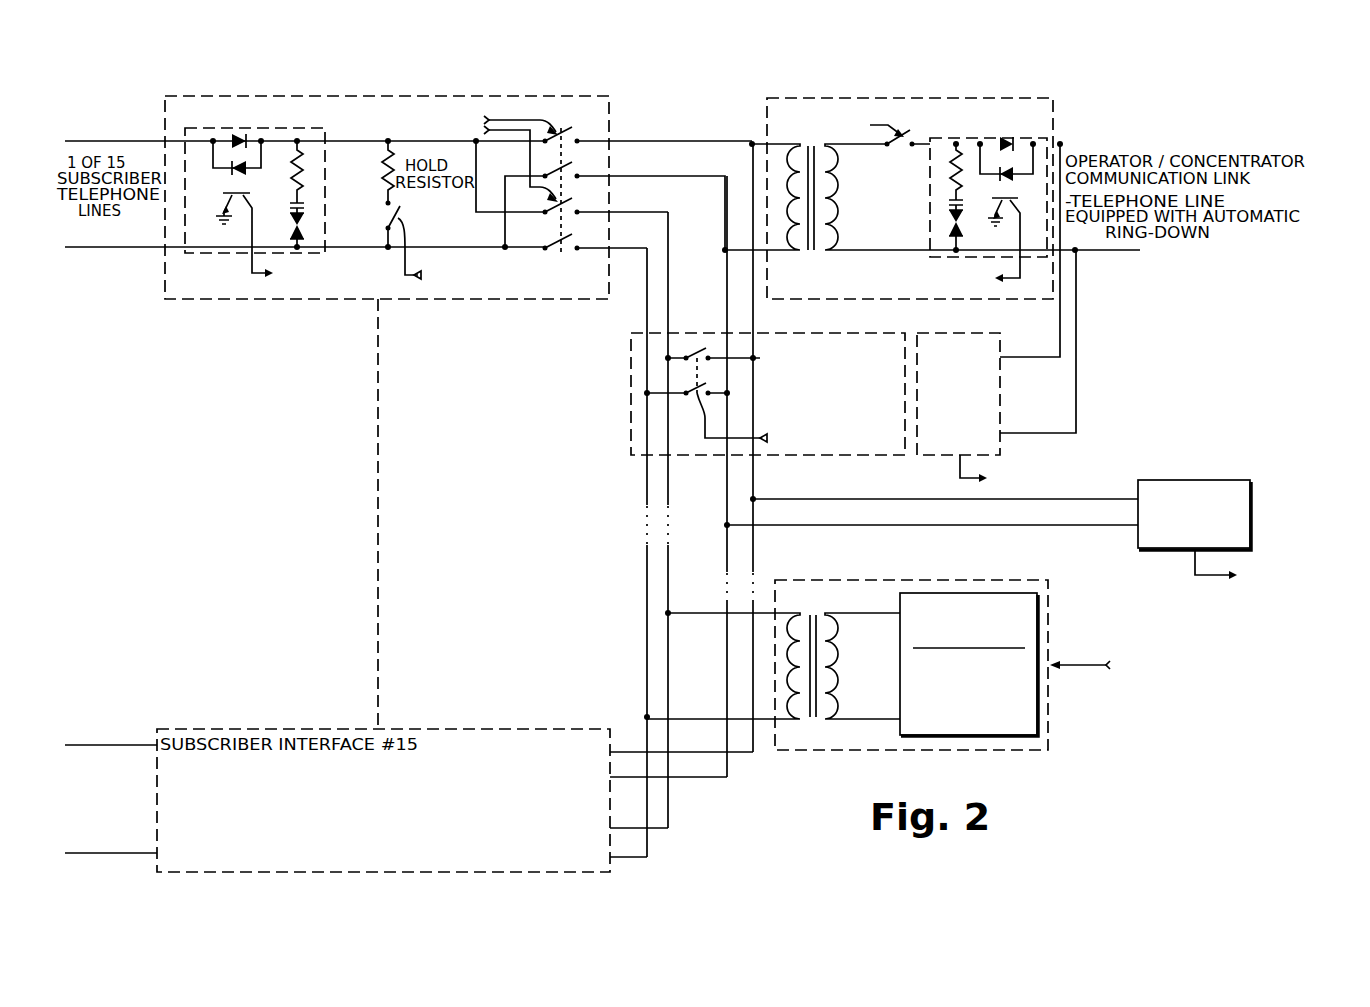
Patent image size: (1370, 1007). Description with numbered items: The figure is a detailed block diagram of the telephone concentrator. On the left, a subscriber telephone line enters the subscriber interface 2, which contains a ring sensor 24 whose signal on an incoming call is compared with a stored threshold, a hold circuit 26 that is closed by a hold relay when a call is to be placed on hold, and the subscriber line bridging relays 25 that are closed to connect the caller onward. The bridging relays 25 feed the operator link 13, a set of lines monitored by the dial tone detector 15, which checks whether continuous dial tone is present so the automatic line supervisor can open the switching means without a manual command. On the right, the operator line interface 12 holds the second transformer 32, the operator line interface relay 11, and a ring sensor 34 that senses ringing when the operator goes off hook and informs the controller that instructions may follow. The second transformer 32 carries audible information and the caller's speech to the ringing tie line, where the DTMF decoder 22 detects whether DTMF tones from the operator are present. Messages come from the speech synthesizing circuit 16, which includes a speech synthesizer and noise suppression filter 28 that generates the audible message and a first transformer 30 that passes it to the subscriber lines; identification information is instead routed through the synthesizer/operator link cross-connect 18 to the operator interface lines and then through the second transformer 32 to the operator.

The subscriber interface 2 is at (165, 97).
The ring sensor 24 is at (193, 253).
The hold circuit 26 is at (378, 218).
The subscriber line bridging relays 25 is at (562, 254).
The operator link 13 is at (647, 313).
The synthesizer/operator link cross-connect 18 is at (817, 460).
The DTMF decoder 22 is at (938, 455).
The operator line interface 12 is at (1053, 106).
The operator line interface relay 11 is at (902, 141).
The ring sensor 34 is at (1047, 140).
The second transformer 32 is at (819, 271).
The dial tone detector 15 is at (1203, 480).
The speech synthesizing circuit 16 is at (980, 580).
The speech synthesizer and noise suppression filter 28 is at (1038, 611).
The first transformer 30 is at (822, 741).